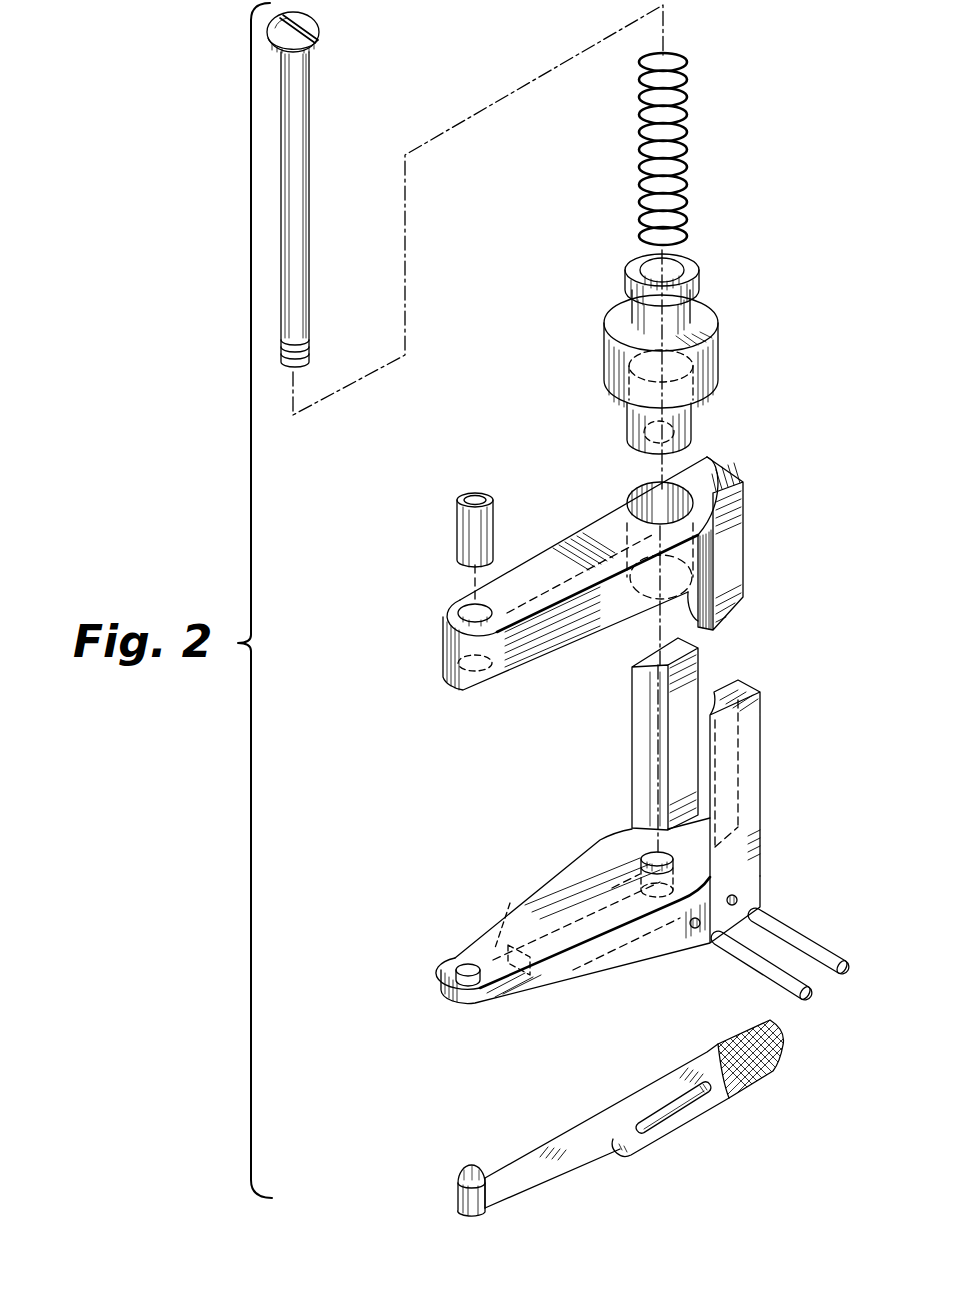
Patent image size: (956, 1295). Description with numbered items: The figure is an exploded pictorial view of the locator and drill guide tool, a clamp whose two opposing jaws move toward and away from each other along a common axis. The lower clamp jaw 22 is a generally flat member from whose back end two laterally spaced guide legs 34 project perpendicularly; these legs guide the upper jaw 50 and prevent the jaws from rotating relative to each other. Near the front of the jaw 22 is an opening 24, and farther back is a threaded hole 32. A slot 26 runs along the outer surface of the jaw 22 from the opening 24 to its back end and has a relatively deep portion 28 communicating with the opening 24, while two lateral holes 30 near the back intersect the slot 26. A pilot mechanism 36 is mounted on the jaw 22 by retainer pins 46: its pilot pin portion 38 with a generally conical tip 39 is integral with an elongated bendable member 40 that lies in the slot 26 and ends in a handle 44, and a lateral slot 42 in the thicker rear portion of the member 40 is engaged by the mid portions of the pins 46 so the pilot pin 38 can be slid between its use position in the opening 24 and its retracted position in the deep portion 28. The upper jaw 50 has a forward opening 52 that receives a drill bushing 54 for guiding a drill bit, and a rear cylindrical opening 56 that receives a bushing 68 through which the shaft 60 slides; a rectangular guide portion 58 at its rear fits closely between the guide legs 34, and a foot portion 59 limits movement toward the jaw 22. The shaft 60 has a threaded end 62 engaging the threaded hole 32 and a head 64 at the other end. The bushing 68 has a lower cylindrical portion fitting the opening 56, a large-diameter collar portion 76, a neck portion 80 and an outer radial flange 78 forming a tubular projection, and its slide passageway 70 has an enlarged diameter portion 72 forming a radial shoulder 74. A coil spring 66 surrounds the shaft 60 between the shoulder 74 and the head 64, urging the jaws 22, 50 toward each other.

The clamp jaw 22 is at (604, 934).
The opening 24 is at (466, 962).
The slot 26 is at (573, 972).
The relatively deep portion 28 is at (504, 926).
The holes 30 is at (738, 898).
The threaded hole 32 is at (652, 850).
The guide legs 34 is at (733, 680).
The pilot mechanism 36 is at (608, 1088).
The pilot pin portion 38 is at (456, 1198).
The conical tip 39 is at (472, 1163).
The elongated bendable member 40 is at (607, 1108).
The slot 42 is at (668, 1115).
The handle 44 is at (762, 1072).
The retainer pins 46 is at (846, 978).
The jaw 50 is at (580, 571).
The opening 52 is at (470, 604).
The drill bushing 54 is at (452, 538).
The cylindrical opening 56 is at (648, 498).
The rectangular guide portion 58 is at (745, 512).
The foot portion 59 is at (716, 628).
The shaft 60 is at (322, 189).
The threaded end 62 is at (312, 345).
The head 64 is at (322, 36).
The coil spring 66 is at (622, 167).
The bushing 68 is at (662, 344).
The slide passageway 70 is at (700, 446).
The enlarged diameter portion 72 is at (688, 262).
The radial shoulder 74 is at (722, 386).
The collar portion 76 is at (718, 336).
The outer radial flange 78 is at (700, 274).
The neck portion 80 is at (630, 310).